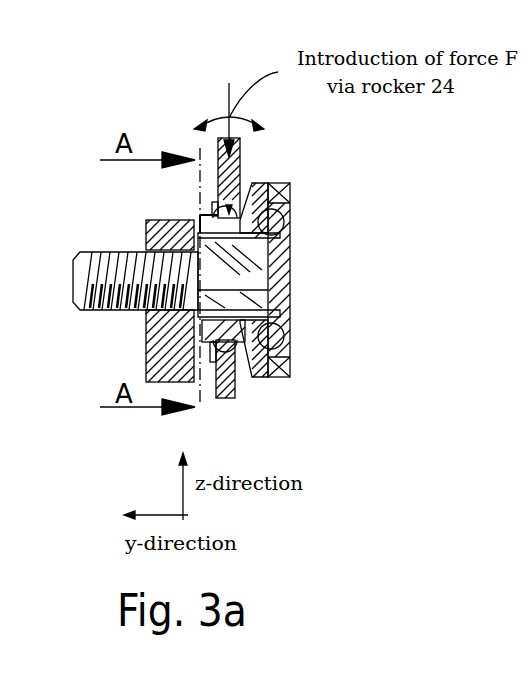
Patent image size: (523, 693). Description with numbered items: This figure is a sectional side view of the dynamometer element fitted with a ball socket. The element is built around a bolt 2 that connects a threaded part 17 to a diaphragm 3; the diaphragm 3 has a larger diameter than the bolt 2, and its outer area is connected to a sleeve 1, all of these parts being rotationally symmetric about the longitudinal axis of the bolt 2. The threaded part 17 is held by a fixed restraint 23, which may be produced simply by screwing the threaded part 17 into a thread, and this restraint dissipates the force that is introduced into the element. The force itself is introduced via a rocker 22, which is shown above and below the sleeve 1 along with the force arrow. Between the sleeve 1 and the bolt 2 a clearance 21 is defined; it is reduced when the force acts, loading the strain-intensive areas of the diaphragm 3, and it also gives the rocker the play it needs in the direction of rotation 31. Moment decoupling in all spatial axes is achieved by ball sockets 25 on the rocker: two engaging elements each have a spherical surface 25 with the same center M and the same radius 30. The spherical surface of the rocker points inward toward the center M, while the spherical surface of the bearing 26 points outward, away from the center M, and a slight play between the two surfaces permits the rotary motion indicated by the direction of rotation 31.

The sleeve 1 is at (244, 201).
The bolt 2 is at (243, 262).
The diaphragm 3 is at (273, 293).
The threaded part 17 is at (78, 309).
The clearance 21 is at (170, 276).
The rocker 22 is at (240, 390).
The fixed restraint 23 is at (165, 352).
The ball socket / spherical surface 25 is at (282, 182).
The bearing 26 is at (258, 342).
The radius 30 is at (280, 217).
The direction of rotation 31 is at (198, 127).
The center M is at (225, 280).